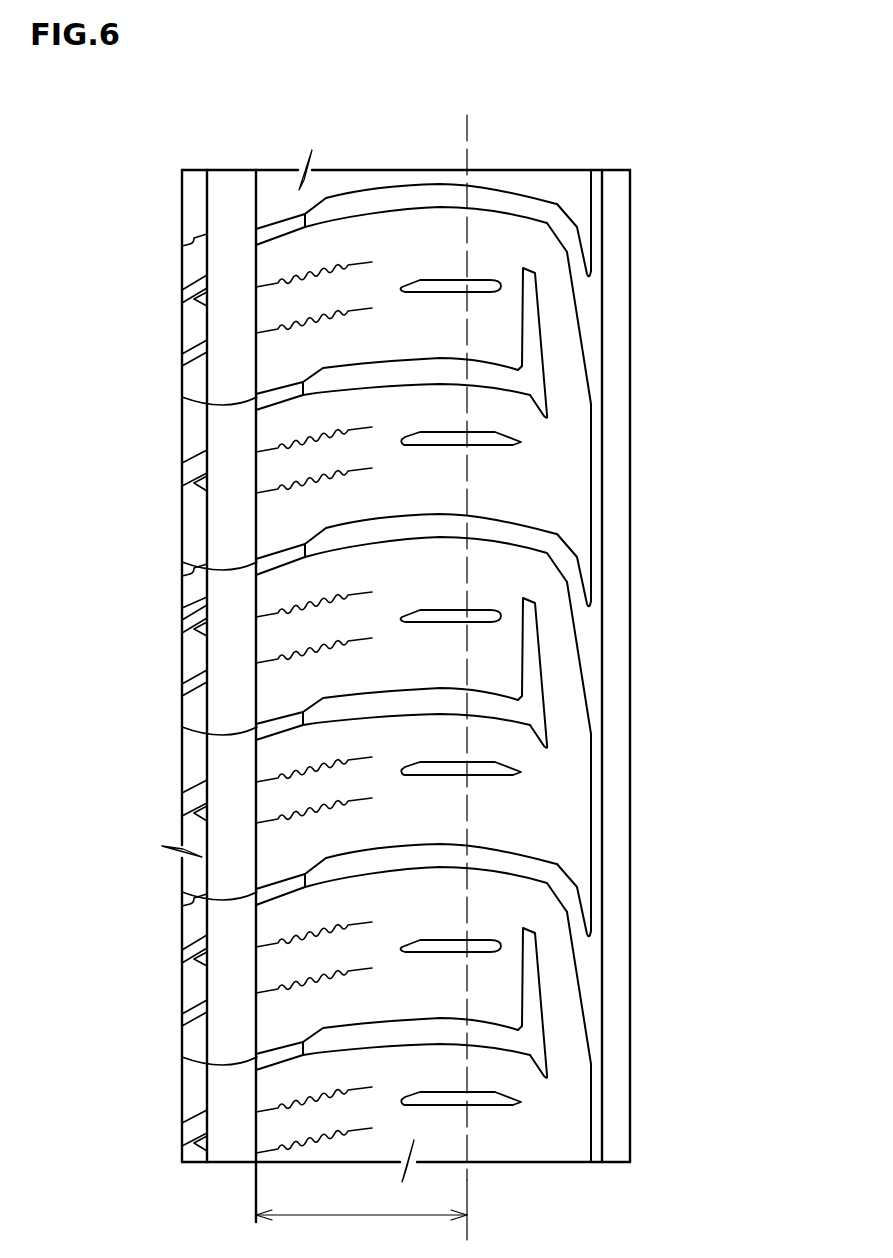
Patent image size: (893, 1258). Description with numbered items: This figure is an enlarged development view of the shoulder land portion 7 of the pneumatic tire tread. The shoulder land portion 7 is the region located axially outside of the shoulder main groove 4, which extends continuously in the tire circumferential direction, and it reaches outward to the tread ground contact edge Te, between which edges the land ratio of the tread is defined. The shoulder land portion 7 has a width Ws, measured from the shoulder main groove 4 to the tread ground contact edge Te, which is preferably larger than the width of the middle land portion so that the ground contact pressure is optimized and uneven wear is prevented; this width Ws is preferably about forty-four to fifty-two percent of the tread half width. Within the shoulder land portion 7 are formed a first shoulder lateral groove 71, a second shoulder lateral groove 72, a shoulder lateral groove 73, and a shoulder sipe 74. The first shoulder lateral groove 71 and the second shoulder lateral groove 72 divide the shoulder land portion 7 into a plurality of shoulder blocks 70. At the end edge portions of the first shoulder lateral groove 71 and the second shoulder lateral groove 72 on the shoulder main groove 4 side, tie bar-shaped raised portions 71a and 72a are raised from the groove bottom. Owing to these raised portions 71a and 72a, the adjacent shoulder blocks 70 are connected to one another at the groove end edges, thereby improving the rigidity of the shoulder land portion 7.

The shoulder main groove 4 is at (233, 223).
The shoulder land portion 7 is at (368, 247).
The shoulder block 70 is at (440, 332).
The first shoulder lateral groove 71 is at (438, 527).
The raised portion 71a is at (270, 558).
The second shoulder lateral groove 72 is at (443, 375).
The raised portion 72a is at (270, 398).
The shoulder lateral groove 73 is at (448, 440).
The shoulder sipe 74 is at (310, 600).
The tread ground contact edge Te is at (480, 146).
The width of the shoulder land portion Ws is at (361, 1229).